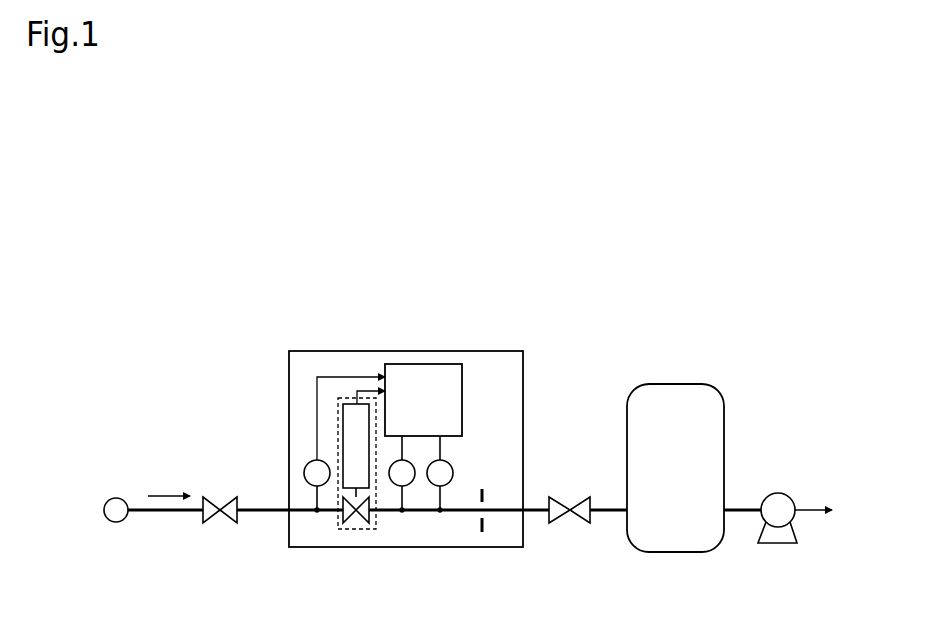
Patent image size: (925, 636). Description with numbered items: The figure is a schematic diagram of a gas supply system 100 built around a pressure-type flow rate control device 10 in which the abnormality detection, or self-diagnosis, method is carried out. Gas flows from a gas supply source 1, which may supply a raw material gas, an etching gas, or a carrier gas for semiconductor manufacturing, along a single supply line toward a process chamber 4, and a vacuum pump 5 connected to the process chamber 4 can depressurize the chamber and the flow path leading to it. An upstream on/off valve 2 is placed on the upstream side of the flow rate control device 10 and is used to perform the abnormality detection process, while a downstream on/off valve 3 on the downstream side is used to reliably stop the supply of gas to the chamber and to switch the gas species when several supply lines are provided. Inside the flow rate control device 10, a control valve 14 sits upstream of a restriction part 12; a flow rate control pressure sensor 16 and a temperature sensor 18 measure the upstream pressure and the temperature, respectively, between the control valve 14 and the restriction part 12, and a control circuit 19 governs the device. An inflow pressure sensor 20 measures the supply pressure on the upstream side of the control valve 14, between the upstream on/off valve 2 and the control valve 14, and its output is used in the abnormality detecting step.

The gas supply system 100 is at (712, 313).
The gas supply source 1 is at (117, 497).
The upstream on/off valve 2 is at (222, 497).
The downstream on/off valve 3 is at (570, 505).
The process chamber 4 is at (672, 553).
The vacuum pump 5 is at (781, 544).
The flow rate control device 10 is at (477, 351).
The restriction part 12 is at (483, 522).
The control valve 14 is at (349, 530).
The flow rate control pressure sensor 16 is at (445, 492).
The temperature sensor 18 is at (401, 490).
The control circuit 19 is at (413, 364).
The inflow pressure sensor 20 is at (306, 484).